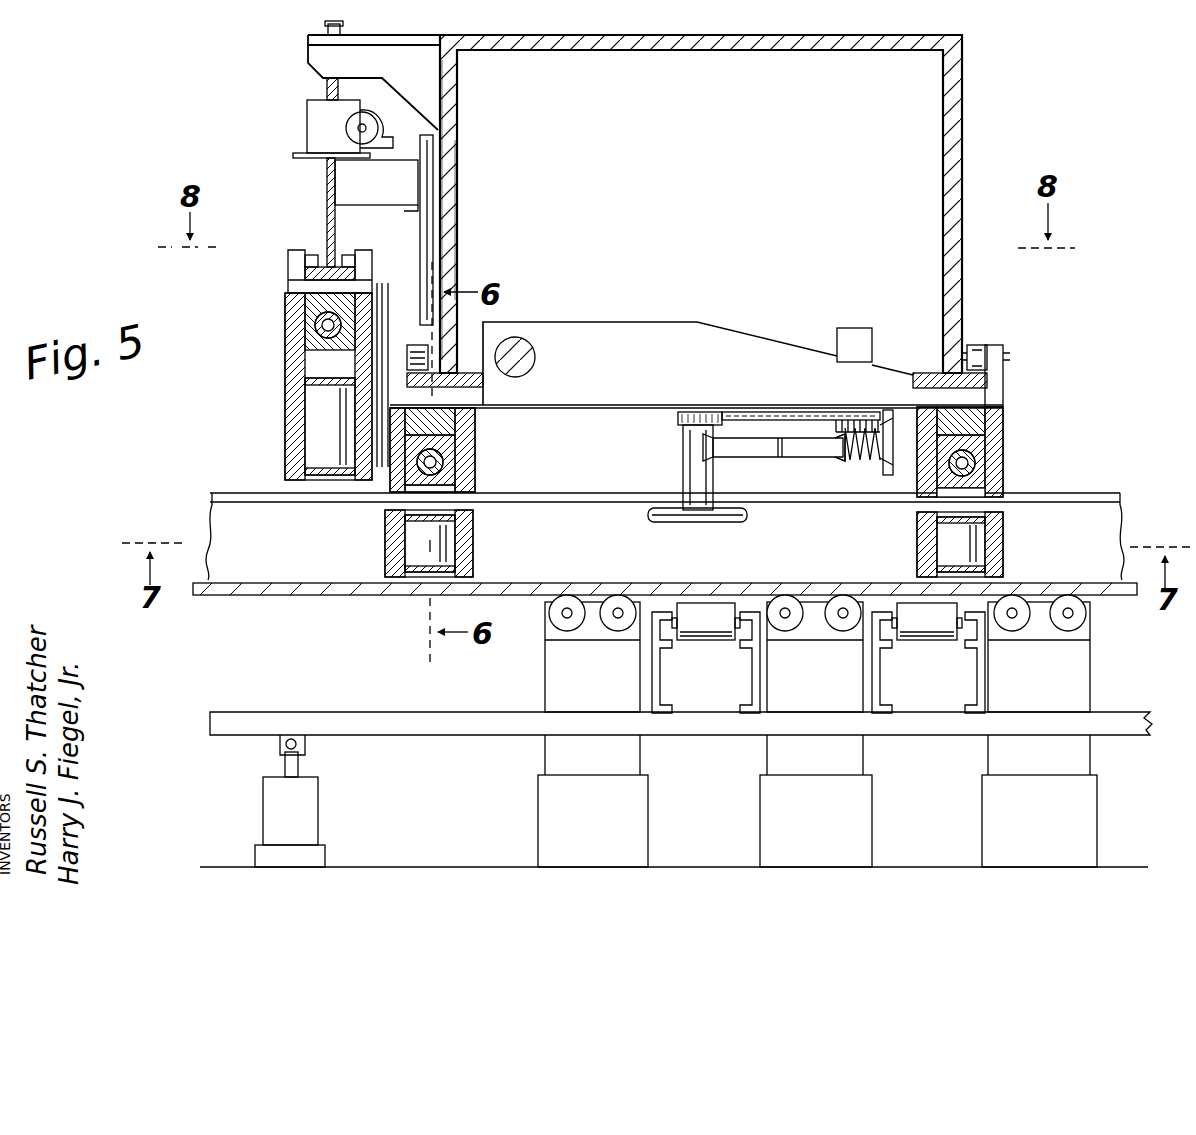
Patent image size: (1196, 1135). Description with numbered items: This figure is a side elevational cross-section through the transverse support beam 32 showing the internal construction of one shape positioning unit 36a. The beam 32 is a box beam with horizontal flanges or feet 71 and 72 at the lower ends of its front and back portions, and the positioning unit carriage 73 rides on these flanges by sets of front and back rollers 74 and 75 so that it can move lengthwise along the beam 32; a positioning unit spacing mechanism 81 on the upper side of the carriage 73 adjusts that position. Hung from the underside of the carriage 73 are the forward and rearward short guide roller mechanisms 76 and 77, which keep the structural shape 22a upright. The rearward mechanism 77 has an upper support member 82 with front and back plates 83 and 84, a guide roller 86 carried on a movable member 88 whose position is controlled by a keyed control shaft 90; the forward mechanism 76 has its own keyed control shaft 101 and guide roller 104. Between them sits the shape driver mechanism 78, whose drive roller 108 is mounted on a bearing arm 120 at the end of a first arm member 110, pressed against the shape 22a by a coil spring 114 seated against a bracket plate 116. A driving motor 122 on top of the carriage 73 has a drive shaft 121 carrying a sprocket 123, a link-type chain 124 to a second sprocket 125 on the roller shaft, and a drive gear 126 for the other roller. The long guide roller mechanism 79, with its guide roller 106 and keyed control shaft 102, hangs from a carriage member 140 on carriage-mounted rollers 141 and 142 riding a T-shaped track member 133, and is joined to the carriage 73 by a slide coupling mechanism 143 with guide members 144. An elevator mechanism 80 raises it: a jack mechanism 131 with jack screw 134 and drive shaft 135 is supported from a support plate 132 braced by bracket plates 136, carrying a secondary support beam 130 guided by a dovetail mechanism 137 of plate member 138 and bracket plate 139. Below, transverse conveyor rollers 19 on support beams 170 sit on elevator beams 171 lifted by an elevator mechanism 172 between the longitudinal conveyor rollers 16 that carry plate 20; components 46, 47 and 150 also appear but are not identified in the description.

The conveyor rollers 16 is at (622, 596).
The conveyor rollers 19 is at (706, 633).
The plate 20 is at (290, 597).
The structural shape 22a is at (255, 505).
The transverse support beam 32 is at (962, 102).
The shape positioning unit 36a is at (1012, 408).
The column 46 is at (545, 685).
The pedestal 47 is at (538, 832).
The horizontal flange 71 is at (920, 372).
The horizontal flange 72 is at (465, 370).
The positioning unit carriage 73 is at (1000, 398).
The front rollers 74 is at (978, 345).
The back rollers 75 is at (418, 345).
The forward short guide roller mechanism 76 is at (1008, 545).
The rearward short guide roller mechanism 77 is at (478, 543).
The shape driver mechanism 78 is at (678, 437).
The long guide roller mechanism 79 is at (280, 425).
The elevator mechanism 80 is at (296, 127).
The positioning unit spacing mechanism 81 is at (588, 318).
The upper support member 82 is at (455, 414).
The front plate 83 is at (456, 458).
The back plate 84 is at (392, 528).
The guide roller 86 is at (420, 542).
The movable member 88 is at (455, 487).
The keyed control shaft 90 is at (450, 448).
The keyed control shaft 101 is at (980, 462).
The keyed control shaft 102 is at (305, 320).
The guide roller 104 is at (960, 545).
The guide roller 106 is at (318, 405).
The drive roller 108 is at (690, 520).
The first arm member 110 is at (738, 450).
The coil spring 114 is at (855, 458).
The bracket plate 116 is at (875, 475).
The bearing arm 120 is at (683, 468).
The drive shaft 121 is at (847, 425).
The driving motor 122 is at (845, 328).
The sprocket 123 is at (840, 425).
The link-type chain 124 is at (750, 412).
The second sprocket 125 is at (690, 410).
The drive gear 126 is at (893, 415).
The secondary support beam 130 is at (326, 178).
The jack mechanism 131 is at (318, 135).
The support plate 132 is at (305, 40).
The T-shaped track member 133 is at (305, 268).
The jack screw 134 is at (326, 88).
The drive shaft 135 is at (358, 128).
The bracket plates 136 is at (458, 85).
The dovetail mechanism 137 is at (404, 211).
The plate member 138 is at (440, 222).
The bracket plate 139 is at (418, 180).
The carriage member 140 is at (290, 285).
The carriage-mounted roller 141 is at (348, 255).
The carriage-mounted roller 142 is at (311, 255).
The slide coupling mechanism 143 is at (428, 250).
The guide members 144 is at (436, 275).
The shaft 150 is at (520, 340).
The support beams 170 is at (672, 686).
The elevator beams 171 is at (378, 711).
The elevator mechanism 172 is at (318, 798).